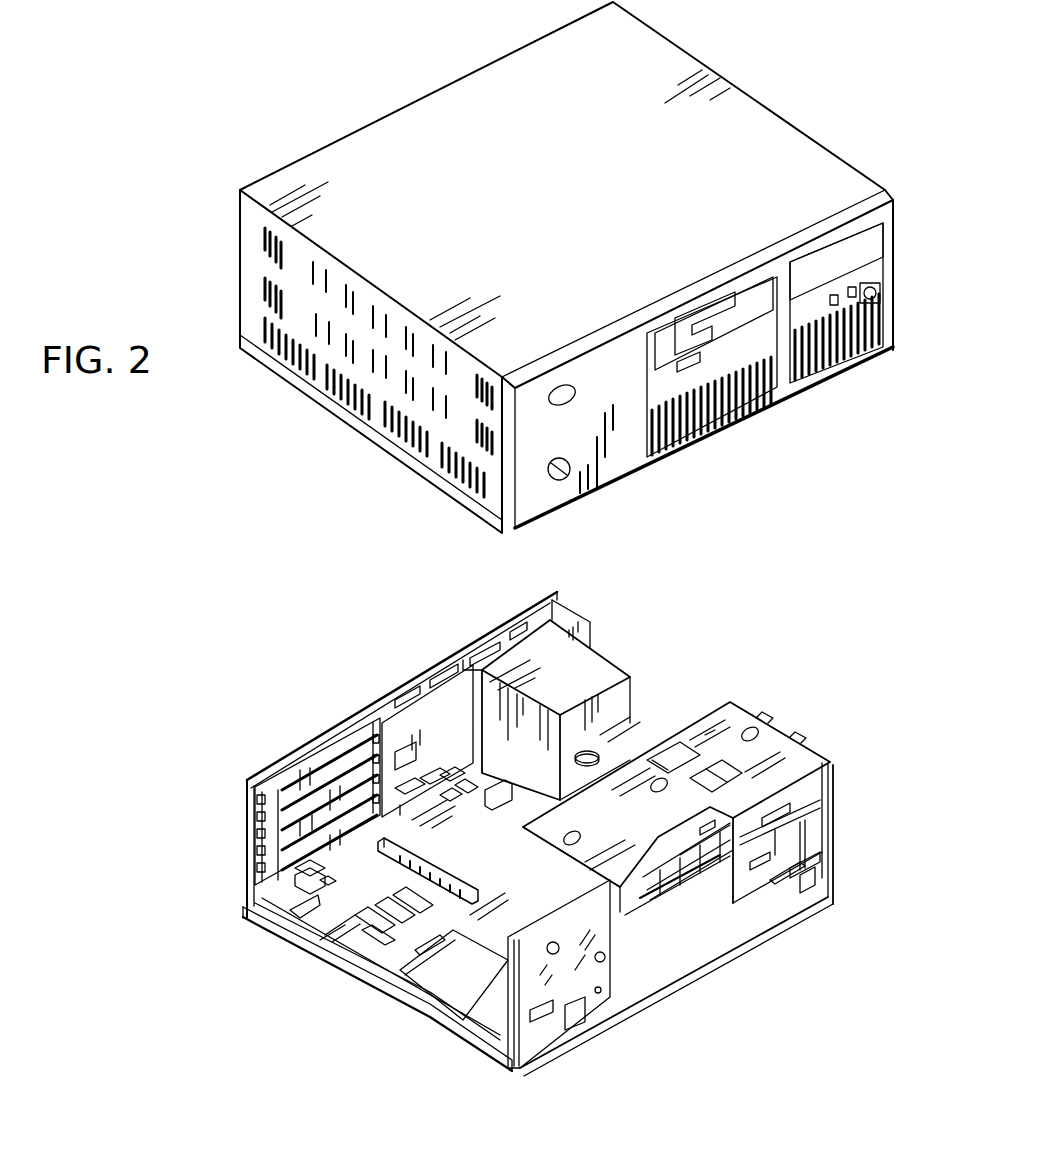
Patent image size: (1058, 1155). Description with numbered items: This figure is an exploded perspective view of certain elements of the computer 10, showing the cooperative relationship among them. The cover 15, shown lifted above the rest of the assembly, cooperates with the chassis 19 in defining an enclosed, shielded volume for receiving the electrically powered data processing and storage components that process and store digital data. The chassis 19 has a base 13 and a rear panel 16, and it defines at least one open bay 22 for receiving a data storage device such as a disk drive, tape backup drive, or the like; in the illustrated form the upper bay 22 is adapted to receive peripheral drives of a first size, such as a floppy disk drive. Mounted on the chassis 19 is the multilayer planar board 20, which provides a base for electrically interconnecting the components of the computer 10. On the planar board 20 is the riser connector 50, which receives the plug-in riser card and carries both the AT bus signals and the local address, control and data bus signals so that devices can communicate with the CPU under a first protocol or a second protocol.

The computer 10 is at (222, 5).
The base 13 is at (360, 980).
The cover 15 is at (408, 108).
The rear panel 16 is at (318, 740).
The chassis 19 is at (582, 612).
The planar board 20 is at (315, 910).
The open bay 22 is at (712, 901).
The riser connector 50 is at (432, 868).